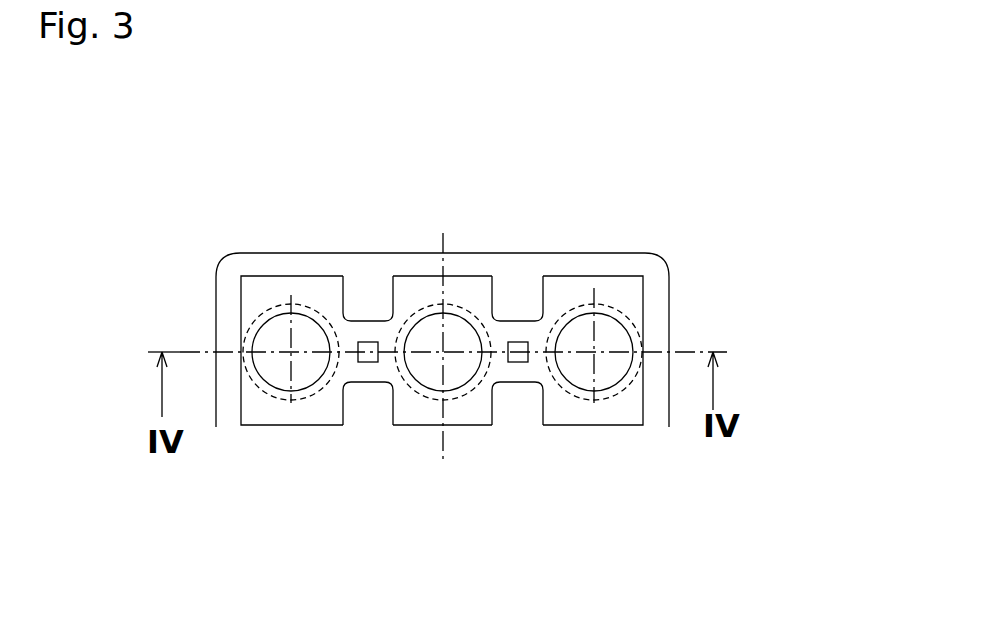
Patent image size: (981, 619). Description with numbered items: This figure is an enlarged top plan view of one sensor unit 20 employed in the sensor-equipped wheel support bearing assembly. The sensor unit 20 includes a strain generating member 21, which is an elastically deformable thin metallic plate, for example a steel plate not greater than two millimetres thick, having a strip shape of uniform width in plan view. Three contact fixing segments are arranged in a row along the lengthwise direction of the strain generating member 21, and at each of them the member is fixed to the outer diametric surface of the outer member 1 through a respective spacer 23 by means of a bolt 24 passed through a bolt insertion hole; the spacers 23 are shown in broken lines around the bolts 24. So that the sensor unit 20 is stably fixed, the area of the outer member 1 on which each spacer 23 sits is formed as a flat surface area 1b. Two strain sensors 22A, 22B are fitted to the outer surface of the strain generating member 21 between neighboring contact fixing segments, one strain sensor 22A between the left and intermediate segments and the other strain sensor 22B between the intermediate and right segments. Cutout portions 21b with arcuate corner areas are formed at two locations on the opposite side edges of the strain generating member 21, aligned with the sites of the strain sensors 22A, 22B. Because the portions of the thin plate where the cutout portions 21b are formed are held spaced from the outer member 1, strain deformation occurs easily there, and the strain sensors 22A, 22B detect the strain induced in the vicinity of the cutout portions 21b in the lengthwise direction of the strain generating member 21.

The outer member 1 is at (667, 157).
The flat surface area 1b is at (556, 265).
The sensor unit 20 is at (355, 268).
The strain generating member 21 is at (465, 290).
The cutout portions 21b is at (373, 320).
The strain sensor 22A is at (366, 364).
The strain sensor 22B is at (512, 362).
The spacers 23 is at (272, 307).
The bolts 24 is at (278, 340).